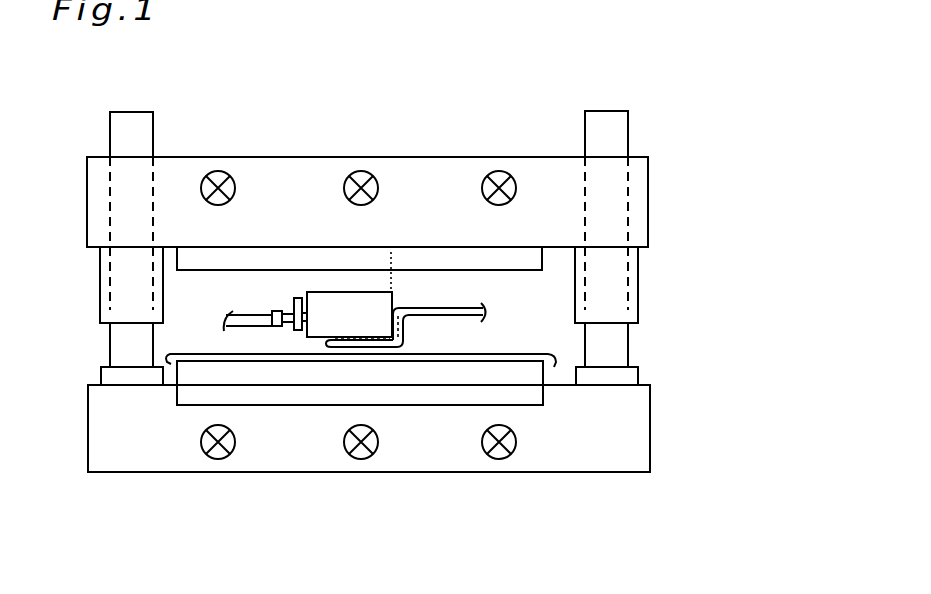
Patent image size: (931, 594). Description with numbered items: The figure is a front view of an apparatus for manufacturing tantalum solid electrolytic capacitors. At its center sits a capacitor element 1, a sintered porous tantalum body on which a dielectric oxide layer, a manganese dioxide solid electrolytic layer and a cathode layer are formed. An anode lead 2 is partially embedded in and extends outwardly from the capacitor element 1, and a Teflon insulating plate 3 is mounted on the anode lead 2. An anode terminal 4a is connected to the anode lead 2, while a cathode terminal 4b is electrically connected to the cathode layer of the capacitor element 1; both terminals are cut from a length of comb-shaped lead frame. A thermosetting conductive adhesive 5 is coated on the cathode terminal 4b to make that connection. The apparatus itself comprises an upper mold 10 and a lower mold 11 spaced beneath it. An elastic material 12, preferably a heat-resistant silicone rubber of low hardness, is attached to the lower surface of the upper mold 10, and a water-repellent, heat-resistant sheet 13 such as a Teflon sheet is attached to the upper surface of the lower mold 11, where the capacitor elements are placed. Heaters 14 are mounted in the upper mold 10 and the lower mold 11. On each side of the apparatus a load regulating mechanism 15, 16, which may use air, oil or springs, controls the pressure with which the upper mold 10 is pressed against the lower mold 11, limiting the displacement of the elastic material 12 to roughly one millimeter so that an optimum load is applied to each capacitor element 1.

The capacitor element 1 is at (336, 302).
The anode lead 2 is at (287, 302).
The insulating plate 3 is at (297, 298).
The anode terminal 4a is at (235, 317).
The cathode terminal 4b is at (430, 307).
The thermosetting conductive adhesive 5 is at (400, 310).
The upper mold 10 is at (540, 175).
The lower mold 11 is at (447, 390).
The elastic material 12 is at (448, 252).
The water-repellent and heat resistant sheet 13 is at (555, 370).
The heater 14 is at (495, 170).
The load regulating mechanism 15 is at (125, 378).
The load regulating mechanism 16 is at (141, 310).